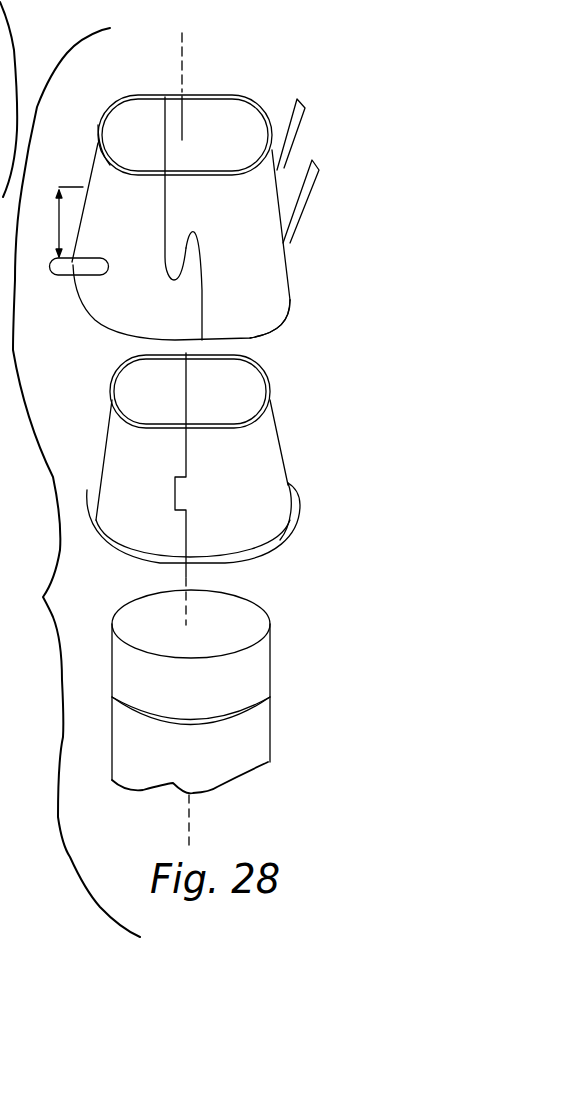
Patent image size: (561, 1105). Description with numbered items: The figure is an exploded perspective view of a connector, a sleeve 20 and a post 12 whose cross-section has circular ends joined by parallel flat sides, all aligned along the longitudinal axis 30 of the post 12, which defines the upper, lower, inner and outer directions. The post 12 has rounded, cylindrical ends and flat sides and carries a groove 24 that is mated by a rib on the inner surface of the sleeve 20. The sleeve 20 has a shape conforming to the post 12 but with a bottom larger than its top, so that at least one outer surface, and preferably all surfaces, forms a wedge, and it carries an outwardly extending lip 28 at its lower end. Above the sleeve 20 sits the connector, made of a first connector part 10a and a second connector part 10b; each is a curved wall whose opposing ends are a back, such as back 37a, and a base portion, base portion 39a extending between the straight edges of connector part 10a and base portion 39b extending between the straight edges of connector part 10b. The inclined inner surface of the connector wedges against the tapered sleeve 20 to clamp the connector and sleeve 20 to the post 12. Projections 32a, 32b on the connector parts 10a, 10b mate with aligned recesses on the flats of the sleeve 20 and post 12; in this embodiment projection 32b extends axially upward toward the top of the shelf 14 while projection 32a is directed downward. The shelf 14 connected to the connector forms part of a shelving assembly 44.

The longitudinal axis 30 is at (181, 62).
The first connector part 10a is at (277, 223).
The second connector part 10b is at (107, 318).
The back 37a is at (252, 103).
The base portion 39b is at (107, 117).
The base portion 39a is at (272, 327).
The projection 32a is at (147, 260).
The projection 32b is at (242, 265).
The shelf 14 is at (57, 205).
The shelving assembly 44 is at (300, 128).
The sleeve 20 is at (263, 453).
The lip 28 is at (300, 515).
The post 12 is at (255, 663).
The groove 24 is at (263, 700).